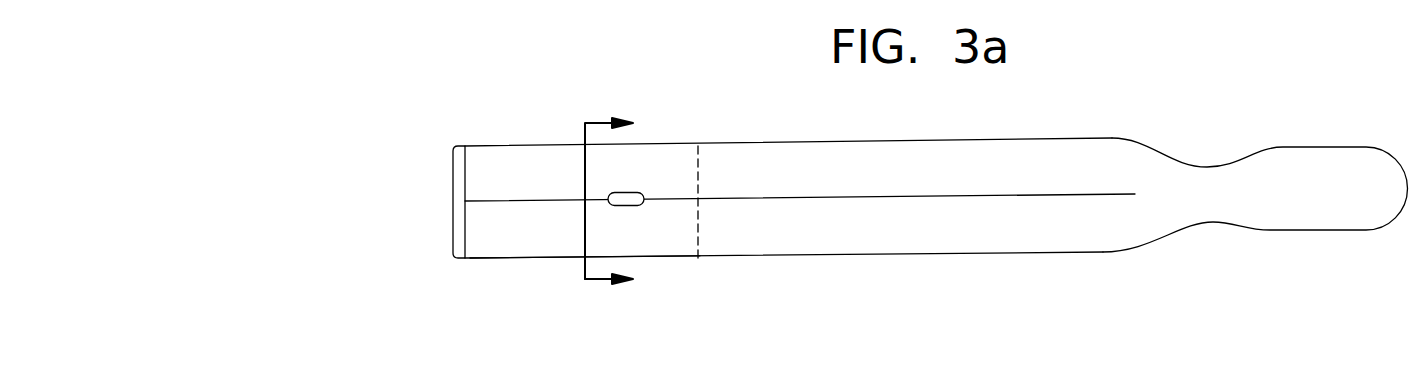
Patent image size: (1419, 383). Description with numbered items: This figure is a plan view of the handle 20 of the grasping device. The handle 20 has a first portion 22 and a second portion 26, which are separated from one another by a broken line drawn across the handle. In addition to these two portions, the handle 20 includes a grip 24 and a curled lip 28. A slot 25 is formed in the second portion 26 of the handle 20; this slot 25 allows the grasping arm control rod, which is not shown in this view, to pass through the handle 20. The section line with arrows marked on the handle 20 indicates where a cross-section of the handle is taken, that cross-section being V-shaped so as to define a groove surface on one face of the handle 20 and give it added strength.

The handle 20 is at (920, 191).
The first portion 22 is at (822, 256).
The grip 24 is at (1280, 230).
The slot 25 is at (640, 192).
The second portion 26 is at (495, 258).
The curled lip 28 is at (455, 146).